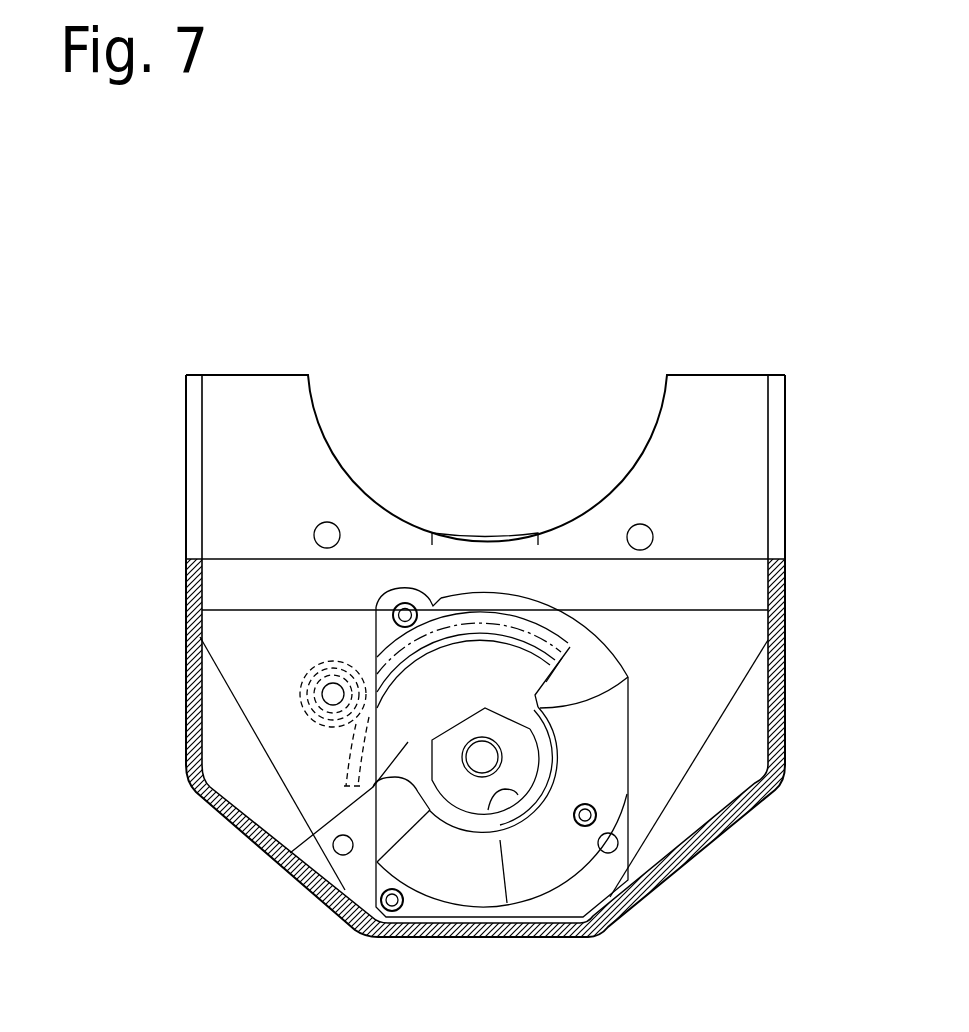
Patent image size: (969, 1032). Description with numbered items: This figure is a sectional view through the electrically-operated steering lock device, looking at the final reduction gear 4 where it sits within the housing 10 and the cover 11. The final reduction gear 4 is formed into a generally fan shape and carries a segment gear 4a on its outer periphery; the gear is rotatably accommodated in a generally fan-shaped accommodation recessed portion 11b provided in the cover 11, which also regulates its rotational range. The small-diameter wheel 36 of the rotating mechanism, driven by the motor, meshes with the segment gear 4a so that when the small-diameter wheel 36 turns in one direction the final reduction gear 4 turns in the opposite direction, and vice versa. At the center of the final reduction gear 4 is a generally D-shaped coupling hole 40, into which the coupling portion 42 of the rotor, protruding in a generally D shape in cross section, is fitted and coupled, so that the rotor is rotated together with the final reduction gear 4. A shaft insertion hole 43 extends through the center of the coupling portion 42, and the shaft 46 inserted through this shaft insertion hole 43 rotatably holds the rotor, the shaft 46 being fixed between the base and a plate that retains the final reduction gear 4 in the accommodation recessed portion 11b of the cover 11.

The housing 10 is at (725, 827).
The cover 11 is at (750, 477).
The accommodation recessed portion 11b is at (433, 870).
The shaft insertion hole 43 is at (353, 923).
The final reduction gear 4 is at (290, 853).
The segment gear 4a is at (444, 634).
The coupling hole 40 is at (542, 803).
The coupling portion 42 is at (522, 754).
The shaft 46 is at (484, 755).
The small-diameter wheel 36 is at (303, 705).